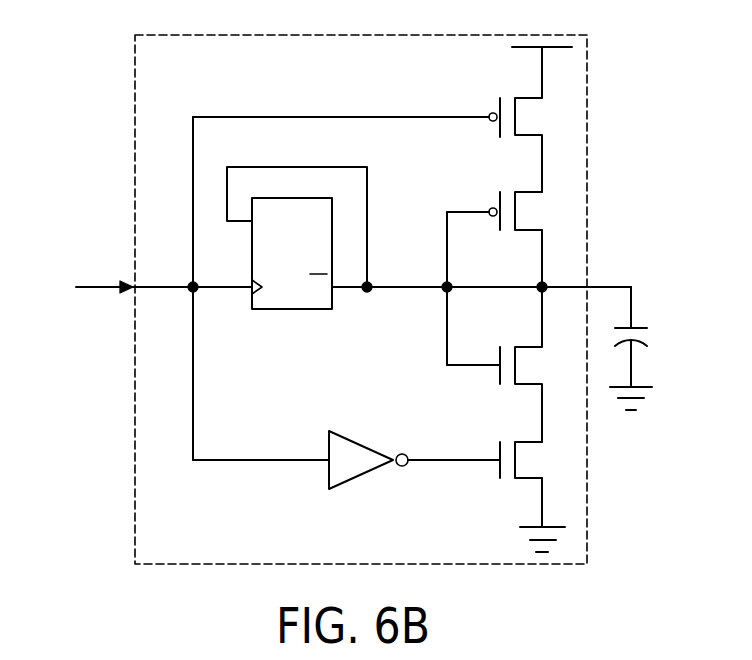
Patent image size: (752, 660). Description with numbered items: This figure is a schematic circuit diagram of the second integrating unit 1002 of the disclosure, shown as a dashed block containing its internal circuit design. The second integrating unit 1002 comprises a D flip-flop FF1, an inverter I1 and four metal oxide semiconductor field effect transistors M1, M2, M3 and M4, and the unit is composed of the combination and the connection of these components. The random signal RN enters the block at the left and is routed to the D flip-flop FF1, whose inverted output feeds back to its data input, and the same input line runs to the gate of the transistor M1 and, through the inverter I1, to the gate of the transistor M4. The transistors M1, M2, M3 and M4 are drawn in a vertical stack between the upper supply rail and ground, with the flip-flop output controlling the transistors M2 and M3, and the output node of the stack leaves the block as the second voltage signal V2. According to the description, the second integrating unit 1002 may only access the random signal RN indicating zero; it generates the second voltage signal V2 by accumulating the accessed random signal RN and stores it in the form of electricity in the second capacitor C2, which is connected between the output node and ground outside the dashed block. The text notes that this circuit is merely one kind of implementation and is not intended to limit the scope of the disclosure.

The second integrating unit 1002 is at (135, 124).
The random signal RN is at (164, 276).
The metal oxide semiconductor field effect transistor M1 is at (530, 119).
The metal oxide semiconductor field effect transistor M2 is at (509, 239).
The metal oxide semiconductor field effect transistor M3 is at (509, 364).
The metal oxide semiconductor field effect transistor M4 is at (489, 497).
The D flip-flop FF1 is at (292, 309).
The inverter I1 is at (361, 477).
The second voltage signal V2 is at (630, 292).
The second capacitor C2 is at (644, 362).